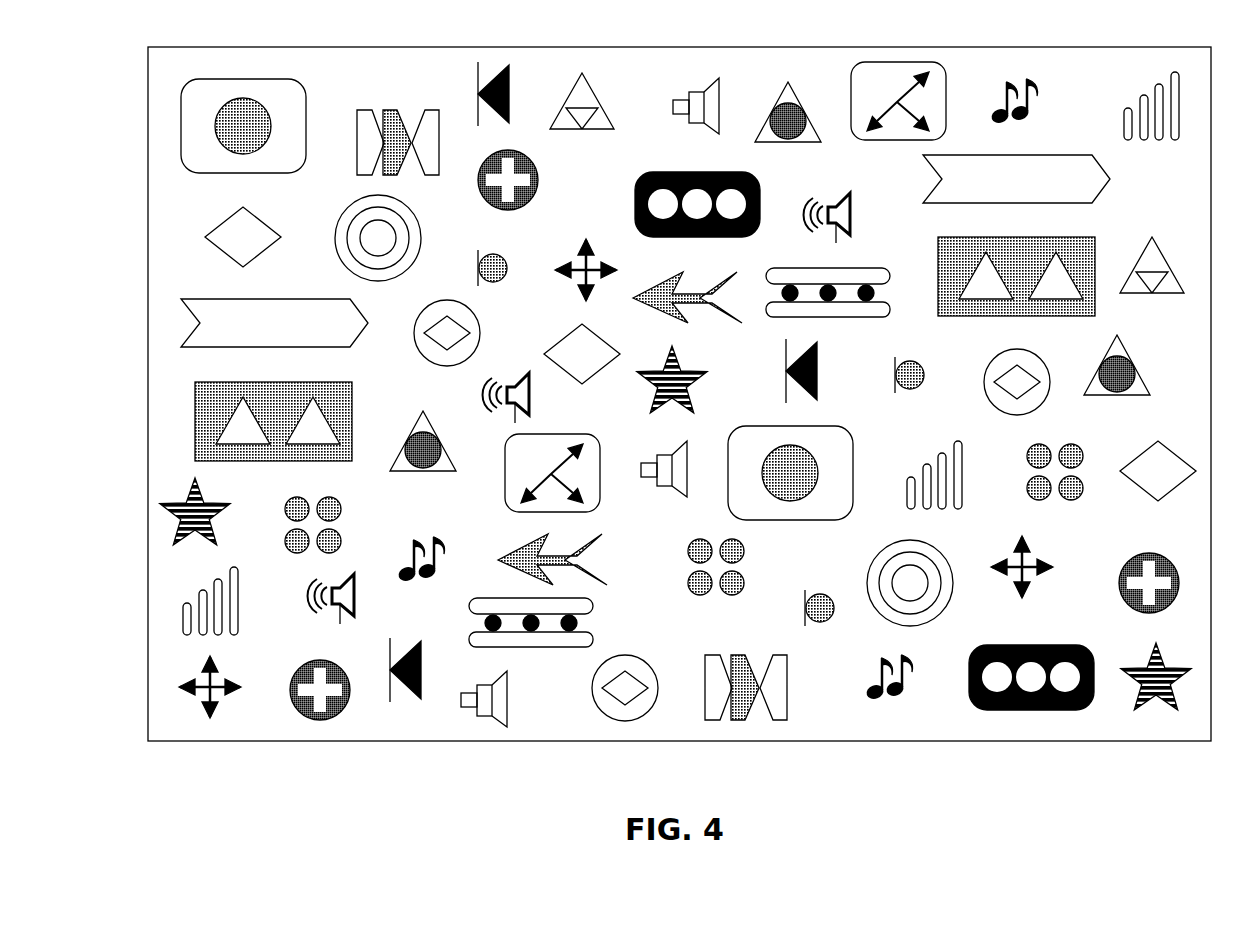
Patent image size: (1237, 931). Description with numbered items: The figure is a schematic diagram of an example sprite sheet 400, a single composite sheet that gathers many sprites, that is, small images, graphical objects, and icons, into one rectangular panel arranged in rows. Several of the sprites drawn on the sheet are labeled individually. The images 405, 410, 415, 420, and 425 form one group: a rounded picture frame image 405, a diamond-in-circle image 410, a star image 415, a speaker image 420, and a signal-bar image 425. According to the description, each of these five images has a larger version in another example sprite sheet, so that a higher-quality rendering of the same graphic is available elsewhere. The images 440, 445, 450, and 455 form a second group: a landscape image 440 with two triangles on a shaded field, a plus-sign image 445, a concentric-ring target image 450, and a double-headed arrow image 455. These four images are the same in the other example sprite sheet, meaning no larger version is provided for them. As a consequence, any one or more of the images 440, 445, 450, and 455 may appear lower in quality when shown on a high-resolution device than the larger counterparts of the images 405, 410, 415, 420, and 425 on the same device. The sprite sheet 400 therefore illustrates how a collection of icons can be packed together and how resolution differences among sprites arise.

The sprite sheet 400 is at (204, 47).
The image 405 is at (306, 96).
The image 410 is at (479, 330).
The image 415 is at (203, 495).
The image 420 is at (508, 690).
The image 425 is at (238, 617).
The image 440 is at (353, 400).
The image 445 is at (539, 178).
The image 450 is at (419, 250).
The image 455 is at (602, 553).